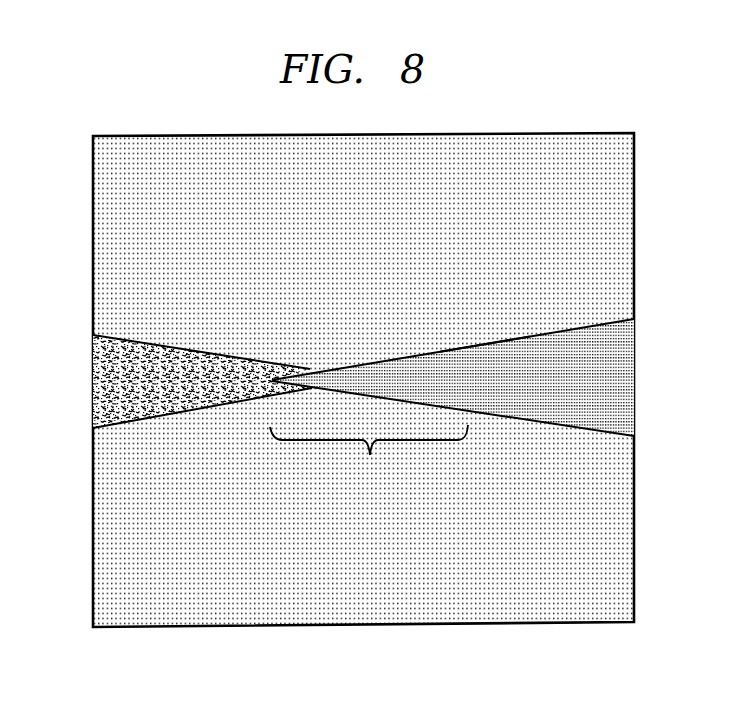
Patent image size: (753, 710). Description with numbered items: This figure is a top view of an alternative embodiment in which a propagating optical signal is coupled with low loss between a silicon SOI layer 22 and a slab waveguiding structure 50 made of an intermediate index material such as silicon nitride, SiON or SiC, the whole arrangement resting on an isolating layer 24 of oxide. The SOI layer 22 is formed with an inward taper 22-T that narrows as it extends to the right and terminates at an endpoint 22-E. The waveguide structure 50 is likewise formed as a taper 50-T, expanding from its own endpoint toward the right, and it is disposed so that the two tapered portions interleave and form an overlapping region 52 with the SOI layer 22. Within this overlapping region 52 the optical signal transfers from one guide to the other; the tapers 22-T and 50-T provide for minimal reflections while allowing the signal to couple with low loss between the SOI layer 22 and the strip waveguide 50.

The SOI layer 22 is at (102, 382).
The isolating layer 24 is at (112, 546).
The slab waveguiding structure 50 is at (598, 380).
The overlapping region 52 is at (369, 459).
The inward taper 22-T is at (298, 362).
The taper 50-T is at (410, 357).
The endpoint 22-E is at (483, 343).